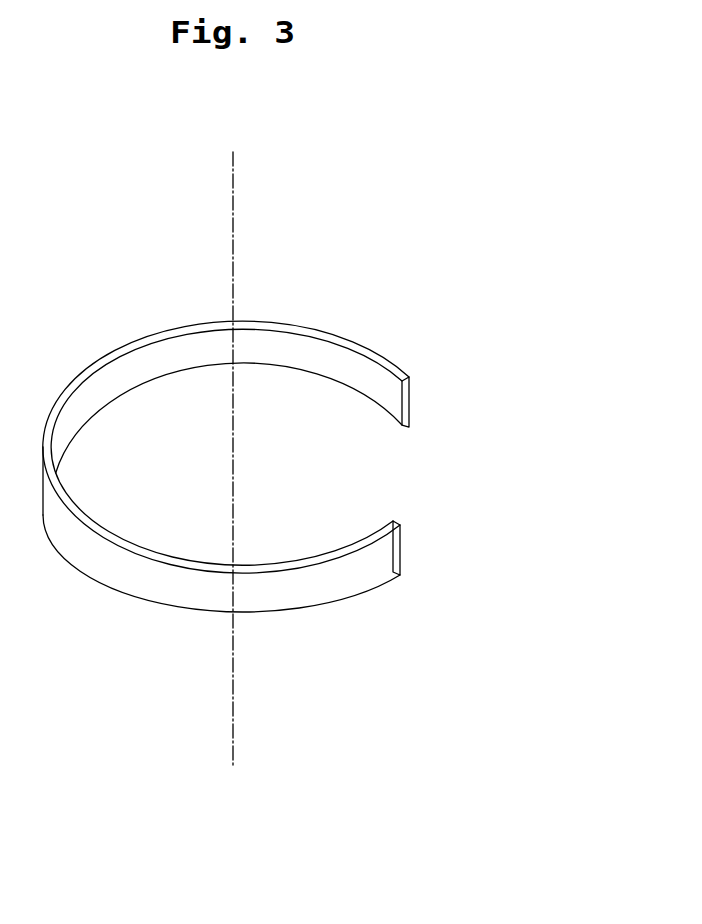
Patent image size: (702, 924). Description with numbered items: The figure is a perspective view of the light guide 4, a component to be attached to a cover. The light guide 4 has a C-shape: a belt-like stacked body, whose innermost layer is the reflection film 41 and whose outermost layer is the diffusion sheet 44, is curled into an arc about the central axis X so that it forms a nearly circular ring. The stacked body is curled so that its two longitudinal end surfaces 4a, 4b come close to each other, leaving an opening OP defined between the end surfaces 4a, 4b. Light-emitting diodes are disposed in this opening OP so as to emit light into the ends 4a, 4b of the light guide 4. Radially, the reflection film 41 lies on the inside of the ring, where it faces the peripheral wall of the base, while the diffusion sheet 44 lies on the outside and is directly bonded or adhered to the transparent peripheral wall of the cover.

The light guide 4 is at (380, 357).
The end surface 4a is at (409, 400).
The end surface 4b is at (401, 548).
The reflection film 41 is at (120, 382).
The diffusion sheet 44 is at (115, 565).
The central axis X is at (235, 230).
The opening OP is at (453, 463).